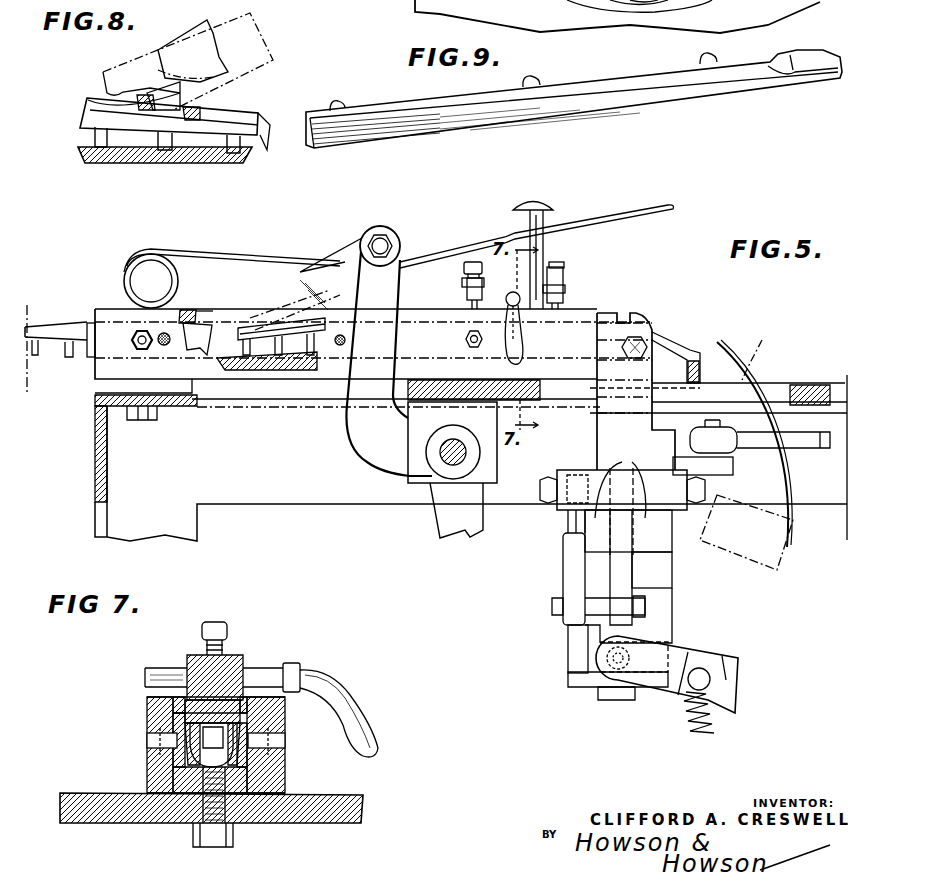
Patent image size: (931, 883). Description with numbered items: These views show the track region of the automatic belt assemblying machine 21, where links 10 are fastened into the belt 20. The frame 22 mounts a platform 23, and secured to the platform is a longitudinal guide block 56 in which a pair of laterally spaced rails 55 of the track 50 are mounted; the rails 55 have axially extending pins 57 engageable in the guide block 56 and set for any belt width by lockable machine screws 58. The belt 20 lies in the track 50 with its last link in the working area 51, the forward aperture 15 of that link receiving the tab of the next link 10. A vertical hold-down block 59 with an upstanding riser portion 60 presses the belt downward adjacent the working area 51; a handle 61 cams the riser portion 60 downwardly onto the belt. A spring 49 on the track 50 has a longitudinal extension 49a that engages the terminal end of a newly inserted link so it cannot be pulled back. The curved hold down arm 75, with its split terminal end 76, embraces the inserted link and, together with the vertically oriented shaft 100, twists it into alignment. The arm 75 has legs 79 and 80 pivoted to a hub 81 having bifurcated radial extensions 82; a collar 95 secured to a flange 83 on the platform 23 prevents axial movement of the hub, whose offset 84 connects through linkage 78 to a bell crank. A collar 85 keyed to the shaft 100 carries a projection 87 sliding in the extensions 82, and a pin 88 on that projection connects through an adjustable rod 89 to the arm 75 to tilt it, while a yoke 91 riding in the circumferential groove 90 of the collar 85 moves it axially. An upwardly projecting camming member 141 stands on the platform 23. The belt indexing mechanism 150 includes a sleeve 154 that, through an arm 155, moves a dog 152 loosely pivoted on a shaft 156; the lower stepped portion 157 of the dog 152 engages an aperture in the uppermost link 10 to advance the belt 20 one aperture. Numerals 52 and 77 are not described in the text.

In FIG. 8, the link 10 is at (262, 137).
In FIG. 5, the link 10 is at (290, 336).
In FIG. 7, the link 10 is at (212, 758).
In FIG. 8, the forward aperture 15 is at (113, 108).
In FIG. 8, the belt 20 is at (243, 101).
In FIG. 5, the belt 20 is at (48, 322).
In FIG. 7, the belt 20 is at (185, 724).
In FIG. 5, the automatic belt assemblying machine 21 is at (108, 300).
In FIG. 5, the frame 22 is at (95, 462).
In FIG. 5, the platform 23 is at (800, 384).
In FIG. 7, the platform 23 is at (363, 797).
In FIG. 5, the spring 49 is at (160, 254).
In FIG. 5, the longitudinal extension 49a is at (650, 210).
In FIG. 5, the track 50 is at (403, 309).
In FIG. 7, the track 50 is at (145, 695).
In FIG. 5, the working area 51 is at (612, 305).
In FIG. 5, the lever 52 is at (770, 670).
In FIG. 9, the rails 55 is at (397, 90).
In FIG. 5, the rails 55 is at (220, 320).
In FIG. 7, the rails 55 is at (173, 758).
In FIG. 8, the longitudinal guide block 56 is at (133, 160).
In FIG. 5, the longitudinal guide block 56 is at (105, 370).
In FIG. 7, the longitudinal guide block 56 is at (285, 780).
In FIG. 9, the axially extending pins 57 is at (335, 101).
In FIG. 5, the axially extending pins 57 is at (170, 343).
In FIG. 7, the axially extending pins 57 is at (147, 741).
In FIG. 5, the lockable machine screws 58 is at (144, 350).
In FIG. 5, the hold-down block 59 is at (462, 289).
In FIG. 7, the hold-down block 59 is at (243, 660).
In FIG. 5, the riser portion 60 is at (488, 298).
In FIG. 7, the riser portion 60 is at (202, 652).
In FIG. 5, the handle 61 is at (522, 345).
In FIG. 7, the handle 61 is at (365, 732).
In FIG. 5, the curved hold down arm 75 is at (540, 455).
In FIG. 5, the split terminal end 76 is at (615, 312).
In FIG. 5, the bar 77 is at (690, 612).
In FIG. 5, the linkage 78 is at (818, 450).
In FIG. 5, the leg 79 is at (682, 540).
In FIG. 5, the leg 80 is at (557, 472).
In FIG. 5, the hub 81 is at (597, 540).
In FIG. 5, the bifurcated radial extensions 82 is at (645, 500).
In FIG. 5, the flange 83 is at (693, 410).
In FIG. 5, the offset 84 is at (733, 465).
In FIG. 5, the collar 85 is at (712, 632).
In FIG. 5, the projection 87 is at (625, 570).
In FIG. 5, the pin 88 is at (588, 615).
In FIG. 5, the adjustable rod 89 is at (567, 524).
In FIG. 5, the circumferential groove 90 is at (575, 645).
In FIG. 5, the yoke 91 is at (668, 697).
In FIG. 5, the collar 95 is at (672, 582).
In FIG. 5, the shaft 100 is at (612, 700).
In FIG. 5, the camming member 141 is at (550, 206).
In FIG. 8, the belt indexing mechanism 150 is at (197, 19).
In FIG. 5, the belt indexing mechanism 150 is at (360, 224).
In FIG. 8, the dog 152 is at (168, 62).
In FIG. 5, the dog 152 is at (290, 295).
In FIG. 5, the sleeve 154 is at (455, 437).
In FIG. 5, the arm 155 is at (352, 445).
In FIG. 5, the shaft 156 is at (382, 238).
In FIG. 8, the lower stepped portion 157 is at (160, 92).